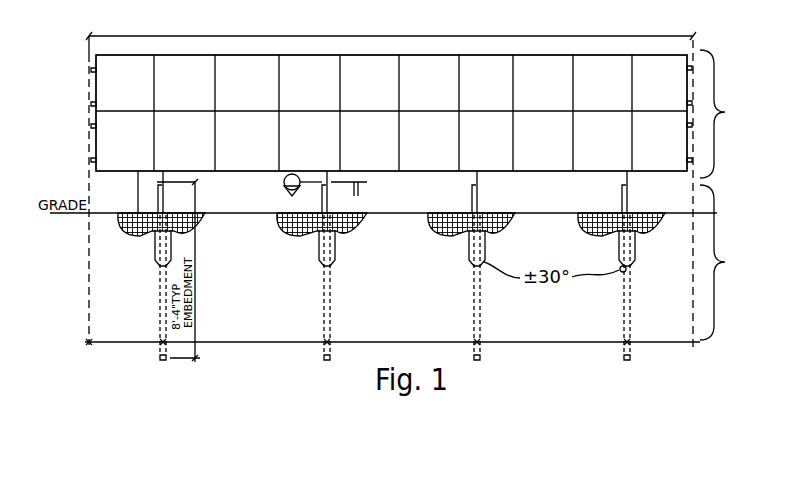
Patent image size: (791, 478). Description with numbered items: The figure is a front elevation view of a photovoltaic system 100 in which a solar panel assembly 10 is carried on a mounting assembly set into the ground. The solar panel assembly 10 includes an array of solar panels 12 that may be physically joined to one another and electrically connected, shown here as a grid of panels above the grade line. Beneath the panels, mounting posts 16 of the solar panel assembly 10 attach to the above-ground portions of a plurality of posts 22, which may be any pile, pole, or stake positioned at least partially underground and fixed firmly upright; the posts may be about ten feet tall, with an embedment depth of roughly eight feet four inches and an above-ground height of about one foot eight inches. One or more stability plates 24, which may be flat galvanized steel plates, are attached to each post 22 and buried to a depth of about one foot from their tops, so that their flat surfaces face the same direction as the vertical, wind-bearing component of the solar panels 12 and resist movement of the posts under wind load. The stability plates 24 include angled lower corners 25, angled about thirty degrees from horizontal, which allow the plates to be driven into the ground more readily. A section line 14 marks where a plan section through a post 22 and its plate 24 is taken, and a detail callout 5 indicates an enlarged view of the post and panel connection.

The system 100 is at (74, 52).
The solar panel assembly 10 is at (726, 195).
The solar panels 12 is at (482, 85).
The line 14 is at (345, 182).
The mounting posts 16 is at (632, 180).
The posts 22 is at (320, 198).
The stability plates 24 is at (317, 262).
The angled lower corners 25 is at (331, 268).
The detail callout 5 is at (303, 185).